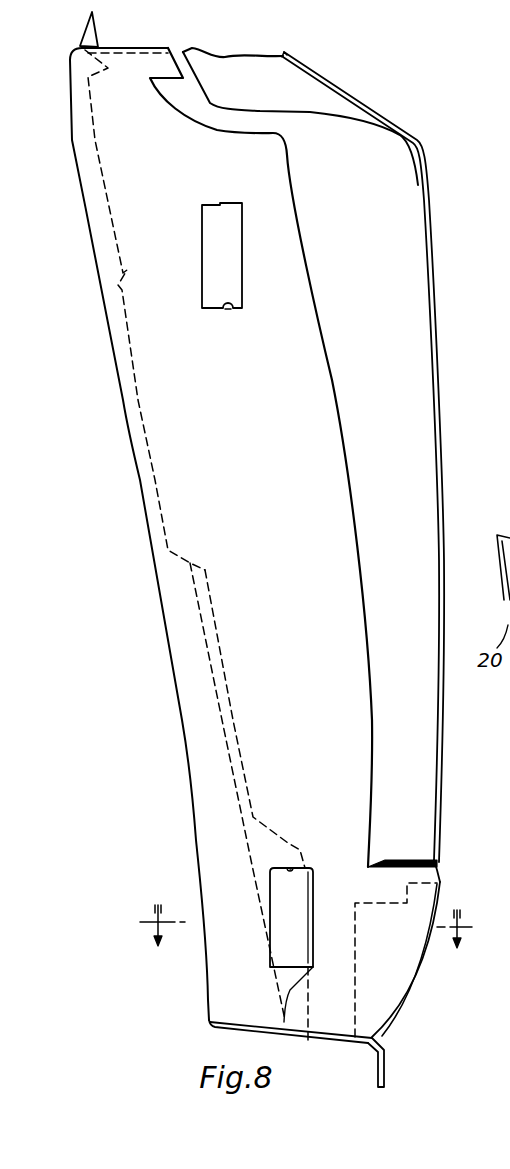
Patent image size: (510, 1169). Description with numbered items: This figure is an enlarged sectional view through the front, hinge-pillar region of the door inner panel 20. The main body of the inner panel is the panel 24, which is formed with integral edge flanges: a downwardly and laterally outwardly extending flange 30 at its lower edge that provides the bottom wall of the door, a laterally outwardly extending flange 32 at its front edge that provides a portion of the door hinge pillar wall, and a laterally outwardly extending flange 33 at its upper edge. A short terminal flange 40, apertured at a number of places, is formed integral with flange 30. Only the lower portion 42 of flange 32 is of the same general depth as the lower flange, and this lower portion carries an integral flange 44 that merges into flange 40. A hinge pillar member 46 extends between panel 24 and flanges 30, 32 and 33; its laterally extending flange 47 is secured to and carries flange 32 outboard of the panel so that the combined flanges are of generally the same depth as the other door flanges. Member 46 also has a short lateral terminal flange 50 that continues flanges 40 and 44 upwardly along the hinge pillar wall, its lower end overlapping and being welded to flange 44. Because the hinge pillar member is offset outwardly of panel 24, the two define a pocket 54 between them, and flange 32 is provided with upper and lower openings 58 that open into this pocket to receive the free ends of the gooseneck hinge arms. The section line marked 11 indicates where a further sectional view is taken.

The door inner panel 20 is at (155, 593).
The panel 24 is at (168, 643).
The flange 30 is at (318, 1040).
The flange 32 is at (178, 502).
The flange 33 is at (99, 47).
The flange 40 is at (390, 1073).
The lower portion 42 is at (385, 983).
The flange 44 is at (440, 905).
The hinge pillar member 46 is at (443, 330).
The flange 47 is at (418, 417).
The terminal flange 50 is at (443, 510).
The pocket 54 is at (232, 248).
The openings 58 is at (228, 310).
The section line 11- 11 is at (305, 949).